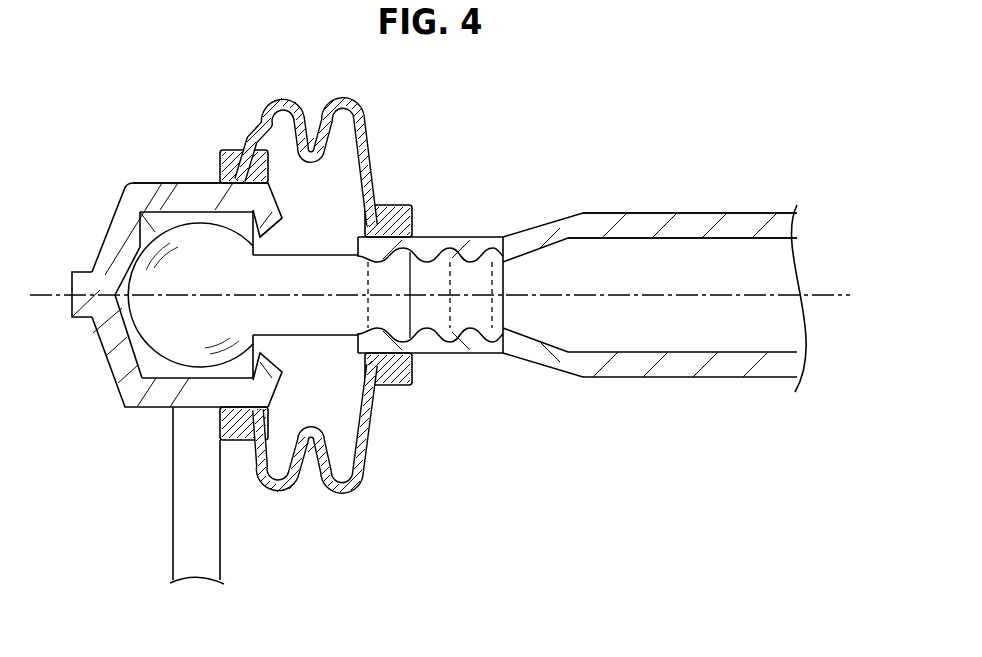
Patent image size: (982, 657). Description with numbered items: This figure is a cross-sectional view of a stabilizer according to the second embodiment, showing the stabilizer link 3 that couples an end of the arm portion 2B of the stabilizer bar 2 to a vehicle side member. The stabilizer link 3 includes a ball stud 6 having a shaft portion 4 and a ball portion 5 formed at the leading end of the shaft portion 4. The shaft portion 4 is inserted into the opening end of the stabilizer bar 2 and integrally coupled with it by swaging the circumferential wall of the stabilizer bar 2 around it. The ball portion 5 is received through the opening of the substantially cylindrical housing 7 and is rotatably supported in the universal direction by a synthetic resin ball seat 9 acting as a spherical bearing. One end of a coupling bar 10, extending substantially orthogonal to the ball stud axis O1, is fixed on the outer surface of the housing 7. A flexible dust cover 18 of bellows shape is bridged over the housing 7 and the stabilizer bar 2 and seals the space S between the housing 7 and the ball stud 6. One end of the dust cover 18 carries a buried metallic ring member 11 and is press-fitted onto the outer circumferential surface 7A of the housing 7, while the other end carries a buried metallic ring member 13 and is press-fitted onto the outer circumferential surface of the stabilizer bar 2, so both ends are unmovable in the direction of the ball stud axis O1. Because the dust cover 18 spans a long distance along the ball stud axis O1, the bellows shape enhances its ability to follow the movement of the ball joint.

The stabilizer bar 2 is at (660, 200).
The arm portion 2B is at (715, 225).
The stabilizer link 3 is at (100, 197).
The shaft portion 4 is at (427, 272).
The ball portion 5 is at (157, 313).
The ball stud 6 is at (311, 343).
The housing 7 is at (122, 370).
The outer circumferential surface 7A is at (193, 183).
The ball seat 9 is at (157, 222).
The coupling bar 10 is at (176, 515).
The ring member 11 is at (232, 165).
The ring member 13 is at (397, 207).
The dust cover 18 is at (362, 126).
The space S is at (285, 247).
The ball stud axis O1 is at (836, 293).